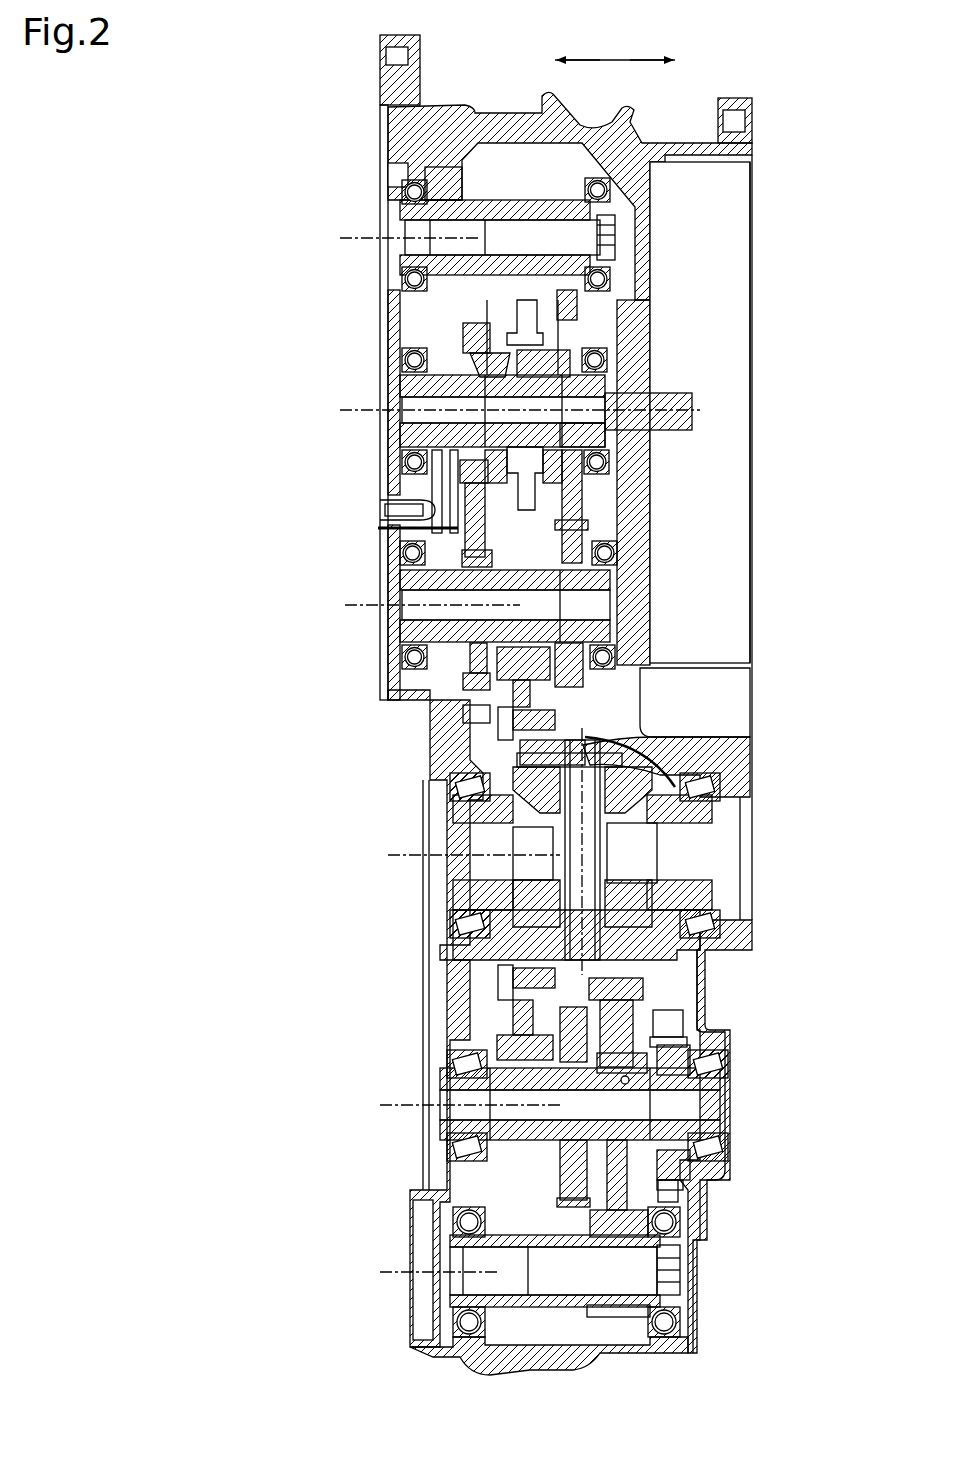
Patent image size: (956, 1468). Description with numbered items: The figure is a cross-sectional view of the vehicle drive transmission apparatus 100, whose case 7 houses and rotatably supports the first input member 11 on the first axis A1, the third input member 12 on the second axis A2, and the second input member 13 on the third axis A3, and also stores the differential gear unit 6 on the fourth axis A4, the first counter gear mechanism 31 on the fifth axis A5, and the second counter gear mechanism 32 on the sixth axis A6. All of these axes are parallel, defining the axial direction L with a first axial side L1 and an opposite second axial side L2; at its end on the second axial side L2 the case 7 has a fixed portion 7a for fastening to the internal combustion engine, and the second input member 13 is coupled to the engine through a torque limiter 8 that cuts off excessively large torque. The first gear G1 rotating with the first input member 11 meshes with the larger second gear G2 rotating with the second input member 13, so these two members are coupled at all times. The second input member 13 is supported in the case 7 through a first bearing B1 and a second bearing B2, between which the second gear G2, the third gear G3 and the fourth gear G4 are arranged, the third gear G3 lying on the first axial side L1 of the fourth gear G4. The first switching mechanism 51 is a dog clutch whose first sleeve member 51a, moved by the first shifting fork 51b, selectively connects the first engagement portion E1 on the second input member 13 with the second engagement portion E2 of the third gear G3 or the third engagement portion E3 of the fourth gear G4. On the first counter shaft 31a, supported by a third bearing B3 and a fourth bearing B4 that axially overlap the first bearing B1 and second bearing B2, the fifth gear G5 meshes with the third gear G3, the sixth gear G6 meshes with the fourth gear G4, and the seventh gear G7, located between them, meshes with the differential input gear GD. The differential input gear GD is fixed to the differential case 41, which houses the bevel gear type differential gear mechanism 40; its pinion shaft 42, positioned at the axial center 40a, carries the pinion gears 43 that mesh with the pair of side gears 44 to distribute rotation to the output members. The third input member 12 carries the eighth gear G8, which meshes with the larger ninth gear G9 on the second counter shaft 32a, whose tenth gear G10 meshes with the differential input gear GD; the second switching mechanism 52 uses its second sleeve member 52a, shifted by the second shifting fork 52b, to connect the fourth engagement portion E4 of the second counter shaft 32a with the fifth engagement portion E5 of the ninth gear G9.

The vehicle drive transmission apparatus 100 is at (258, 78).
The case 7 is at (445, 98).
The fixed portion 7a is at (745, 100).
The torque limiter 8 is at (735, 153).
The axial direction L is at (615, 44).
The first axial side L1 is at (557, 62).
The second axial side L2 is at (672, 62).
The first gear G1 is at (440, 180).
The first input member 11 is at (495, 203).
The first axis A1 is at (392, 241).
The first switching mechanism 51 is at (515, 297).
The fourth gear G4 is at (613, 242).
The third gear G3 is at (475, 328).
The first sleeve member 51a is at (565, 318).
The first bearing B1 is at (405, 355).
The second bearing B2 is at (600, 350).
The first engagement portion E1 is at (632, 414).
The third axis A3 is at (502, 413).
The second input member 13 is at (435, 425).
The third engagement portion E3 is at (620, 440).
The second engagement portion E2 is at (440, 497).
The first shifting fork 51b is at (530, 495).
The third bearing B3 is at (415, 533).
The seventh gear G7 is at (585, 530).
The second gear G2 is at (398, 556).
The fourth bearing B4 is at (610, 573).
The fifth axis A5 is at (415, 610).
The first counter shaft 31a is at (440, 632).
The sixth gear G6 is at (580, 683).
The first counter gear mechanism 31 is at (440, 668).
The center of the differential gear mechanism 40a is at (615, 747).
The fifth gear G5 is at (470, 720).
The pinion gear 43 is at (650, 762).
The differential gear mechanism 40 is at (530, 840).
The pinion shaft 42 is at (592, 850).
The fourth axis A4 is at (456, 856).
The side gear 44 is at (650, 878).
The differential case 41 is at (710, 932).
The ninth gear G9 is at (680, 945).
The differential gear unit 6 is at (495, 942).
The second switching mechanism 52 is at (680, 995).
The second sleeve member 52a is at (660, 1015).
The differential input gear GD is at (495, 1050).
The fourth engagement portion E4 is at (700, 1052).
The sixth axis A6 is at (448, 1108).
The second counter shaft 32a is at (445, 1128).
The fifth engagement portion E5 is at (700, 1170).
The second counter gear mechanism 32 is at (498, 1178).
The tenth gear G10 is at (527, 1160).
The second shifting fork 52b is at (676, 1192).
The second axis A2 is at (418, 1274).
The third input member 12 is at (575, 1305).
The eighth gear G8 is at (620, 1317).